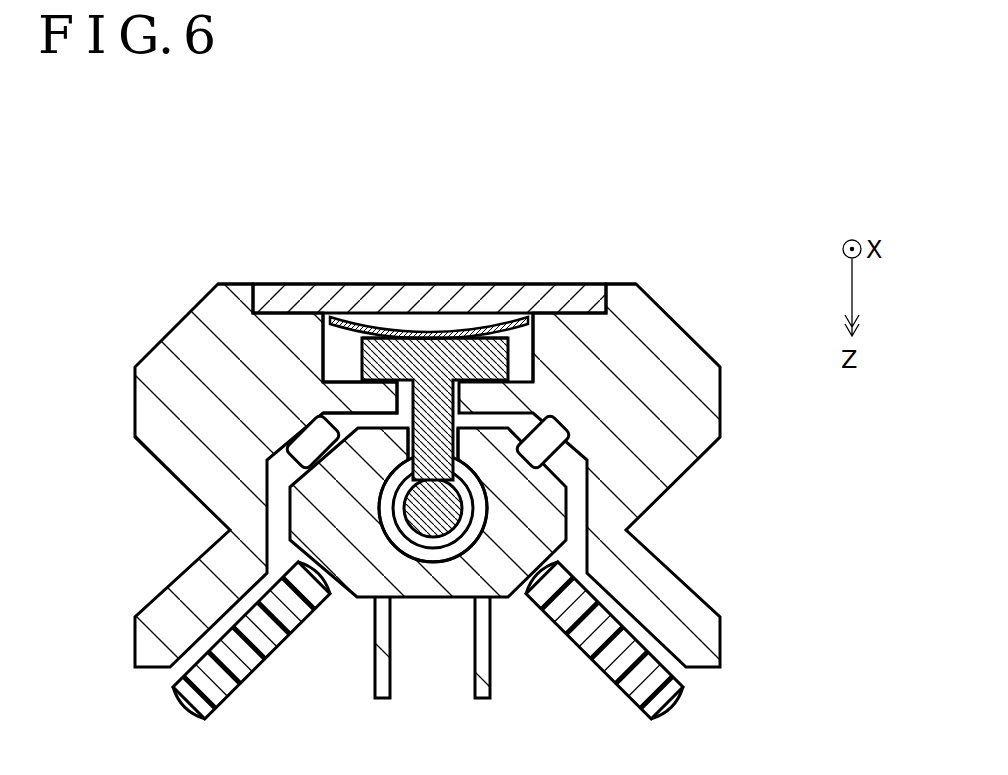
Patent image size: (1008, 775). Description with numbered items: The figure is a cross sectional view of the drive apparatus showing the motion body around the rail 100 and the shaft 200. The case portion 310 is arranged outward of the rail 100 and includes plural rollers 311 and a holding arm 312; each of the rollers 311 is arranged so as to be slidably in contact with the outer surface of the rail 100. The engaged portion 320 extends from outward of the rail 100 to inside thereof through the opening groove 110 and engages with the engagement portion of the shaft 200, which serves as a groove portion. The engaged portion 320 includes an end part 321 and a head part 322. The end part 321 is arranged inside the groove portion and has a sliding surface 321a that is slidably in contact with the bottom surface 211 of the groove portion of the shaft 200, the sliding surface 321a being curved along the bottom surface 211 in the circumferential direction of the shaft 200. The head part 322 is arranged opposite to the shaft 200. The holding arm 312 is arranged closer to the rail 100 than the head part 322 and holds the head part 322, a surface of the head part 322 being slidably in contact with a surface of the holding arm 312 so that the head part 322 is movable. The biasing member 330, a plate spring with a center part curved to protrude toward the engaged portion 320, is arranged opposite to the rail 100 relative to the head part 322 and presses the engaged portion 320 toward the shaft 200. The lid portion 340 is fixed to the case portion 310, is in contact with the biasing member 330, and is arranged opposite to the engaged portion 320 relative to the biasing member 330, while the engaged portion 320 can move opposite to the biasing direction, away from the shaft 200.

The rail 100 is at (442, 588).
The opening groove 110 is at (463, 443).
The shaft 200 is at (487, 510).
The bottom surface 211 is at (462, 502).
The case portion 310 is at (150, 391).
The rollers 311 is at (293, 445).
The holding arm 312 is at (350, 392).
The engaged portion 320 is at (403, 338).
The end part 321 is at (362, 405).
The sliding surface 321a is at (433, 535).
The head part 322 is at (483, 356).
The biasing member 330 is at (437, 332).
The lid portion 340 is at (312, 284).